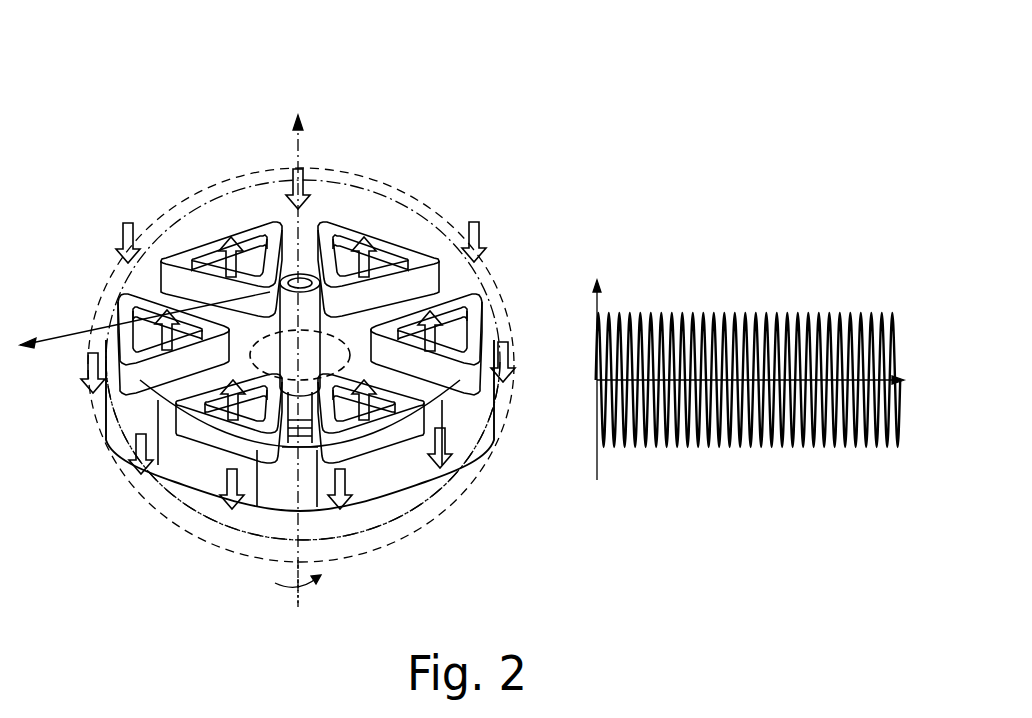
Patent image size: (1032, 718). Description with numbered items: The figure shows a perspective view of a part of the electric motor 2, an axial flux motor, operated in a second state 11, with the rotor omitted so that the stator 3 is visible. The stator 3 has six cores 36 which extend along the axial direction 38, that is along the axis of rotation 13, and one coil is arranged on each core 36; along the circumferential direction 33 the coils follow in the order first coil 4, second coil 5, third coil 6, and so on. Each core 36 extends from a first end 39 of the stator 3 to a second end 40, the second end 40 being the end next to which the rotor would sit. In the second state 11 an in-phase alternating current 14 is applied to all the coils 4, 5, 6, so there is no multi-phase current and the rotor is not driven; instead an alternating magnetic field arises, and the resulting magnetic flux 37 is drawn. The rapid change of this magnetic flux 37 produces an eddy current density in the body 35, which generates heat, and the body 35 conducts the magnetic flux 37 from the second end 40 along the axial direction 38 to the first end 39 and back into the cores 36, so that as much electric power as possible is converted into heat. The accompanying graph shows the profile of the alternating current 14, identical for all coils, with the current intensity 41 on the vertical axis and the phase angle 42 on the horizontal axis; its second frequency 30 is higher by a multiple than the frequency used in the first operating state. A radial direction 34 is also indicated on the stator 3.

The electric motor 2 is at (460, 154).
The stator 3 is at (388, 217).
The first coil 4 is at (217, 228).
The second coil 5 is at (350, 213).
The third coil 6 is at (127, 305).
The second state 11 is at (478, 192).
The axis of rotation 13 is at (298, 137).
The alternating current 14 is at (800, 310).
The second frequency 30 is at (759, 330).
The circumferential direction 33 is at (313, 586).
The radial direction 34 is at (43, 342).
The body 35 is at (270, 550).
The core 36 is at (450, 333).
The magnetic flux 37 is at (203, 475).
The axial direction 38 is at (298, 117).
The first end 39 is at (230, 548).
The second end 40 is at (149, 226).
The current intensity 41 is at (595, 366).
The phase angle 42 is at (768, 383).